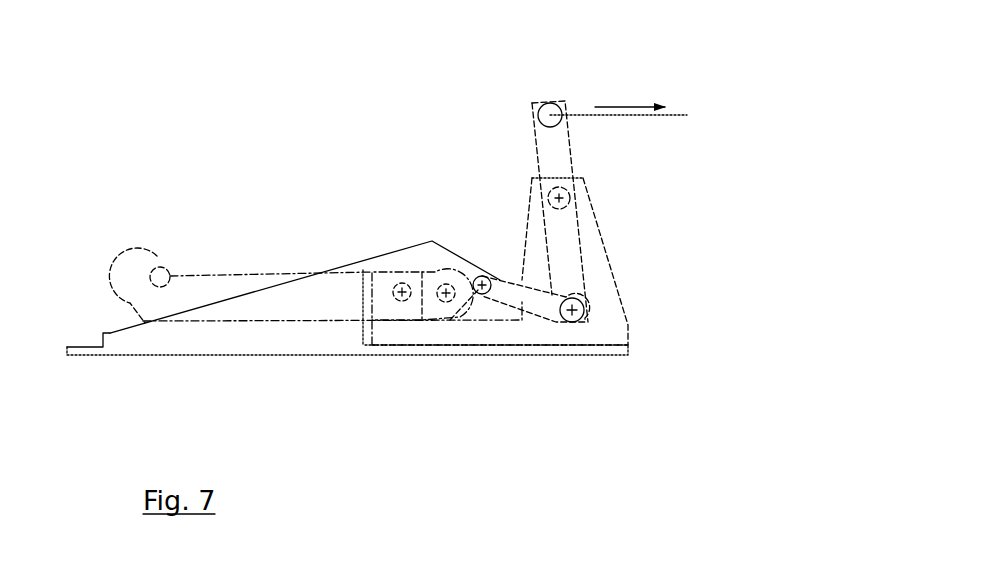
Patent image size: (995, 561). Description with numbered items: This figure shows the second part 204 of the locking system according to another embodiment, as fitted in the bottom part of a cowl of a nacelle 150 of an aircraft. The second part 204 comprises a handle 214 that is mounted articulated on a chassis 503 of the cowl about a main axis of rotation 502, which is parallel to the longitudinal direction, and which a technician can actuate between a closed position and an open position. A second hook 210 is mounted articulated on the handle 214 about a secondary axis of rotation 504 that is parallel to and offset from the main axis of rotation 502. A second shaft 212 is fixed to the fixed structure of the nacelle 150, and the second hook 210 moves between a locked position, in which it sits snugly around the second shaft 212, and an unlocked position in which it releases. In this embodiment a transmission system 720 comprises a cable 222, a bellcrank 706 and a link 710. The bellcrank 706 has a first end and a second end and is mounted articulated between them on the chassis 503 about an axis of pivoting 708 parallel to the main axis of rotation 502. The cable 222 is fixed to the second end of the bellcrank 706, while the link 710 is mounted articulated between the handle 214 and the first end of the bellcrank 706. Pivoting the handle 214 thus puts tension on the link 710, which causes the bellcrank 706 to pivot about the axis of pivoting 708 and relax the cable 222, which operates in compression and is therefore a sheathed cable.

The nacelle 150 is at (690, 92).
The second part 204 is at (252, 142).
The second hook 210 is at (130, 267).
The second shaft 212 is at (162, 275).
The handle 214 is at (195, 350).
The cable 222 is at (667, 115).
The main axis of rotation 502 is at (402, 301).
The chassis 503 is at (618, 352).
The secondary axis of rotation 504 is at (446, 302).
The bellcrank 706 is at (568, 252).
The axis of pivoting 708 is at (568, 198).
The link 710 is at (545, 300).
The transmission system 720 is at (448, 163).